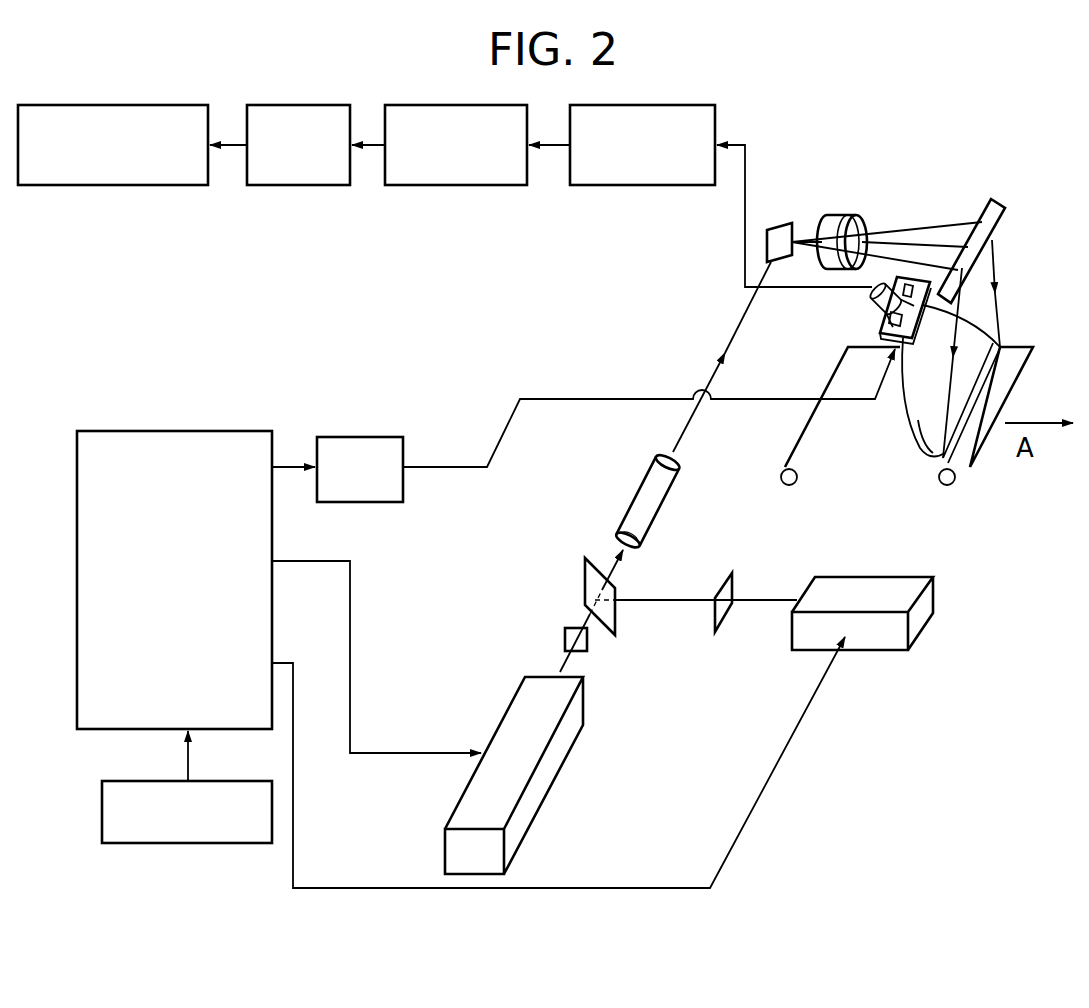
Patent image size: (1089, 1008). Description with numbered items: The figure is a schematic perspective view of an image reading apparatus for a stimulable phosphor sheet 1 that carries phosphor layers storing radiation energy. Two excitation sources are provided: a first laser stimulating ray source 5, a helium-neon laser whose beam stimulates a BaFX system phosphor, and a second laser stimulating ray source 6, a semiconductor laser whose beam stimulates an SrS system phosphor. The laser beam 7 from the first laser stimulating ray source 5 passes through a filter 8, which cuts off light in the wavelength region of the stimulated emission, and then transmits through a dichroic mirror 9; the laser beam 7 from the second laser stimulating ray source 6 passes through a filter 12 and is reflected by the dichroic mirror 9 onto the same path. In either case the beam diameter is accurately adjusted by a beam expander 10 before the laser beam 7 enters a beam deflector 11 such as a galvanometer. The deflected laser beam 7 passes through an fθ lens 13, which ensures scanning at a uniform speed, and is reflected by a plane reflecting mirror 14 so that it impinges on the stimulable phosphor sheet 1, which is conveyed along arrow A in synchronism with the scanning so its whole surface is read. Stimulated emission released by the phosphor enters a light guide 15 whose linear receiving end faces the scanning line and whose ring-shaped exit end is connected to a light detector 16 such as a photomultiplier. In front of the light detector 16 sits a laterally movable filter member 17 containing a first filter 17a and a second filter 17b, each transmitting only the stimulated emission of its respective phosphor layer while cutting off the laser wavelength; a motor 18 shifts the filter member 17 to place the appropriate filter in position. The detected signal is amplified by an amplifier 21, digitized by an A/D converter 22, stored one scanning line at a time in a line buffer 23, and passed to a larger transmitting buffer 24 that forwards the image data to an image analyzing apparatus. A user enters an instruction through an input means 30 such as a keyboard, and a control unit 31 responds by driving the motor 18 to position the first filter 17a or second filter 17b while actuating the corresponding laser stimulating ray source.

The stimulable phosphor sheet 1 is at (855, 450).
The first laser stimulating ray source 5 is at (528, 702).
The second laser stimulating ray source 6 is at (890, 638).
The laser beam 7 is at (717, 366).
The filter 8 is at (565, 630).
The dichroic mirror 9 is at (590, 585).
The beam expander 10 is at (641, 506).
The beam deflector 11 is at (782, 222).
The filter 12 is at (724, 612).
The fθ lens 13 is at (845, 222).
The plane reflecting mirror 14 is at (988, 222).
The light guide 15 is at (908, 470).
The light detector 16 is at (868, 293).
The filter member 17 is at (873, 330).
The first filter 17a is at (888, 322).
The second filter 17b is at (912, 283).
The motor 18 is at (370, 440).
The amplifier 21 is at (663, 187).
The A/D converter 22 is at (463, 187).
The line buffer 23 is at (285, 187).
The transmitting buffer 24 is at (121, 187).
The input means 30 is at (122, 806).
The control unit 31 is at (143, 440).